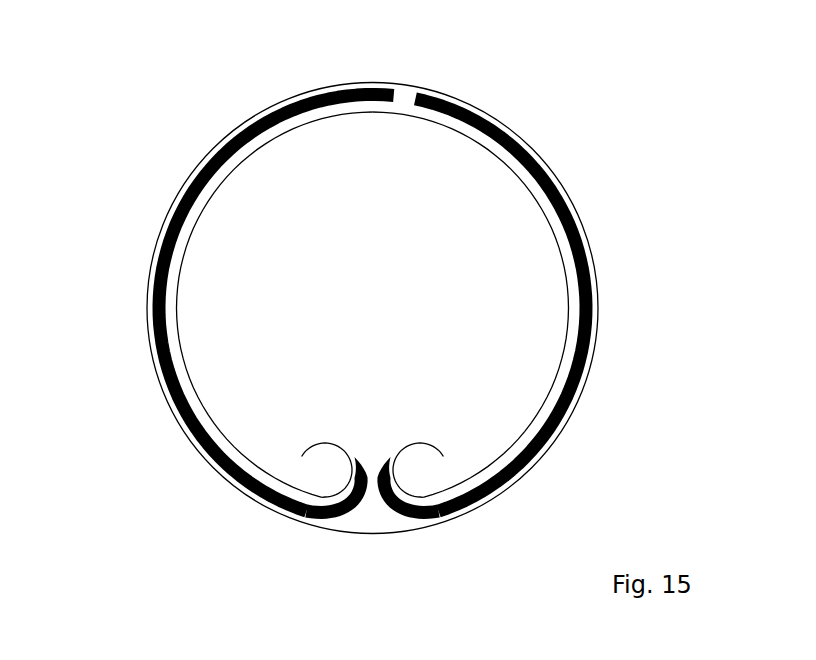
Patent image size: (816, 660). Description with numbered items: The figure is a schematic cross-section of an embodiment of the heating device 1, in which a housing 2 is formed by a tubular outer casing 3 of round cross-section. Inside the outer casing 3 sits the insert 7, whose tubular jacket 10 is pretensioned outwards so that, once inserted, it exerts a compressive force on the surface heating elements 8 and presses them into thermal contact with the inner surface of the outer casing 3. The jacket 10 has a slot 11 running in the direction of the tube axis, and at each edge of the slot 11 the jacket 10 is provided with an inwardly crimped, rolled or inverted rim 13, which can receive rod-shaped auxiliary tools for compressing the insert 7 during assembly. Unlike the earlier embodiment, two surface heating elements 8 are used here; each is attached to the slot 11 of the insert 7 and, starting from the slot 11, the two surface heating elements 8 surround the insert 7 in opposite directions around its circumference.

The heating device 1 is at (110, 164).
The housing 2 is at (131, 355).
The outer casing 3 is at (463, 100).
The insert 7 is at (540, 247).
The surface heating element 8 is at (155, 312).
The jacket 10 is at (232, 162).
The slot 11 is at (373, 512).
The rim 13 is at (422, 435).